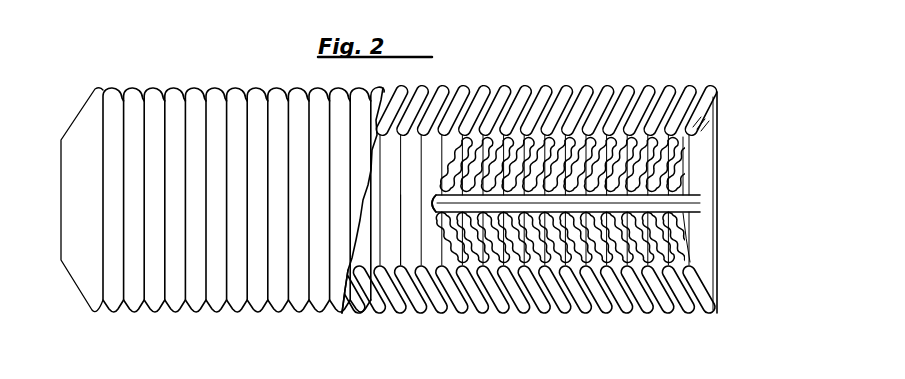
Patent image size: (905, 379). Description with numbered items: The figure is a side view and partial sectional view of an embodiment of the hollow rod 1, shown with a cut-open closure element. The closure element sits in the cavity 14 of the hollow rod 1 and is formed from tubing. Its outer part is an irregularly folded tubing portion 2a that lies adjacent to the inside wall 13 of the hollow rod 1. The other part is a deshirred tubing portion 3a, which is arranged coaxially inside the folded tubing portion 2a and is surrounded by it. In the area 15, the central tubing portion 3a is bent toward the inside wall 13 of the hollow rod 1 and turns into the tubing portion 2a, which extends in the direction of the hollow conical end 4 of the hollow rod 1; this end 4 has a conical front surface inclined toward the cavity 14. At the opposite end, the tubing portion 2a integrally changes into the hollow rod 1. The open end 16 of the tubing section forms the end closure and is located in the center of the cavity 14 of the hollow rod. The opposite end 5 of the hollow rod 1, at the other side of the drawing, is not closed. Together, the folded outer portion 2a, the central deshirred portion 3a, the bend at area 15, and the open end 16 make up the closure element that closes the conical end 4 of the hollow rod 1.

The hollow rod 1 is at (700, 86).
The irregularly folded tubing portion 2a is at (672, 170).
The deshirred tubing portion 3a is at (700, 195).
The hollow conical end 4 is at (696, 278).
The opposite end 5 is at (60, 155).
The inside wall 13 is at (358, 300).
The cavity 14 is at (408, 250).
The area 15 is at (433, 213).
The open end 16 is at (703, 205).